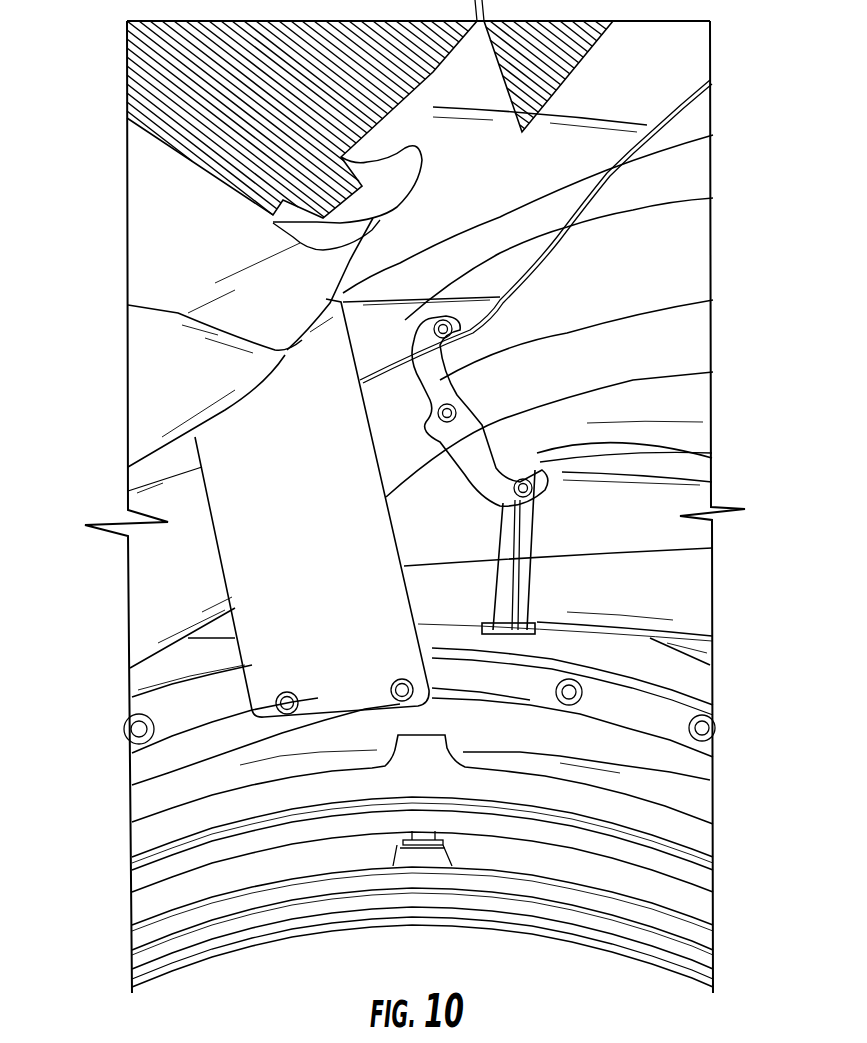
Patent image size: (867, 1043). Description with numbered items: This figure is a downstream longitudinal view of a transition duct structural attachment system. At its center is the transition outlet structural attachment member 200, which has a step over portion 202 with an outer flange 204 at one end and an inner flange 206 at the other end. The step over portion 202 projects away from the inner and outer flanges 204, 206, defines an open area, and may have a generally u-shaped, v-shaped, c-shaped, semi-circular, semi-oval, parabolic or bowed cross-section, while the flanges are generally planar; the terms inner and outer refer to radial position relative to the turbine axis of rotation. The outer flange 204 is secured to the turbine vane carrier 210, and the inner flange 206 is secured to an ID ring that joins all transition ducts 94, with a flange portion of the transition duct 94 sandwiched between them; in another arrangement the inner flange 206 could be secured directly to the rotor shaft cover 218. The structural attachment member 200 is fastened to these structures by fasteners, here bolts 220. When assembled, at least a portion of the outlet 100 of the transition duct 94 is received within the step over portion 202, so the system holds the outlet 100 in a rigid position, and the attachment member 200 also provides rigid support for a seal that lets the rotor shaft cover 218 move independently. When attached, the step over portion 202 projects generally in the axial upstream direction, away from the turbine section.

The transition duct 94 is at (468, 338).
The outlet 100 is at (152, 608).
The transition outlet structural attachment member 200 is at (425, 566).
The step over portion 202 is at (342, 535).
The outer flange 204 is at (405, 318).
The inner flange 206 is at (695, 758).
The turbine vane carrier 210 is at (410, 406).
The rotor shaft cover 218 is at (692, 900).
The bolts 220 is at (395, 703).